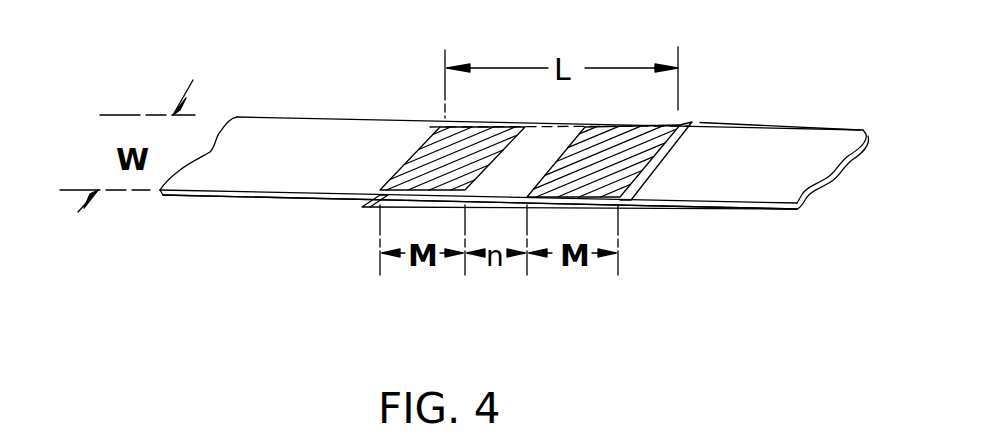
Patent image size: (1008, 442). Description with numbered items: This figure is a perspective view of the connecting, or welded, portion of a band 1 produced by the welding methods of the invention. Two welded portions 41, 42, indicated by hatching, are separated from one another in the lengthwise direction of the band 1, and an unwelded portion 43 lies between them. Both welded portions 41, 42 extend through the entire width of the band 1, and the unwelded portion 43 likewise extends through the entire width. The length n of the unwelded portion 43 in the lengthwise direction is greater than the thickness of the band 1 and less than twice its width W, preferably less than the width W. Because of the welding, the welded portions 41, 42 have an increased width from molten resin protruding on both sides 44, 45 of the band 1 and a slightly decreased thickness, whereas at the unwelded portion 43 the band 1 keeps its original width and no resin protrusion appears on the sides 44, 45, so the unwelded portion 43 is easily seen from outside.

The band 1 is at (805, 140).
The welded portion 41 is at (440, 160).
The welded portion 42 is at (650, 162).
The unwelded portion 43 is at (531, 153).
The side of the band 44 is at (312, 196).
The side of the band 45 is at (748, 132).